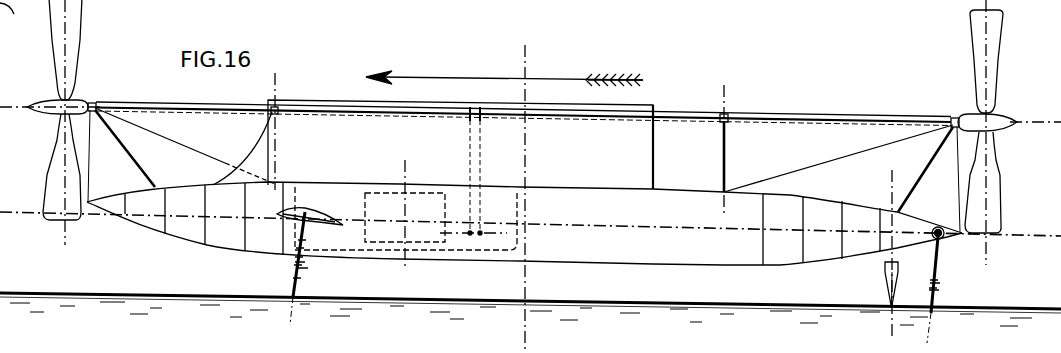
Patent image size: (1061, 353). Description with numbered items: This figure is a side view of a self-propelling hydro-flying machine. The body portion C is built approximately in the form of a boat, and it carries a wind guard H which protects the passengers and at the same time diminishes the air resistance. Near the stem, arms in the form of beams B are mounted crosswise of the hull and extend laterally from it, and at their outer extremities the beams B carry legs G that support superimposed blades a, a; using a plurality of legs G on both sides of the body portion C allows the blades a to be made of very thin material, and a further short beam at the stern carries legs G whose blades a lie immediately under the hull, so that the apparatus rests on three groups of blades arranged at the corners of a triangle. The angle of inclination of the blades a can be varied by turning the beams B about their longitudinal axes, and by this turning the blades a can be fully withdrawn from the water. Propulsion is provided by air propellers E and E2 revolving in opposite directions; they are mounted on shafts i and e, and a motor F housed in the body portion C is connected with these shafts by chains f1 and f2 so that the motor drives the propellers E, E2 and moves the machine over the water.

The air propeller E is at (77, 32).
The air propeller E2 is at (997, 55).
The shaft i is at (279, 111).
The shaft e is at (719, 119).
The chain f1 is at (459, 173).
The chain f2 is at (488, 173).
The wind guard H is at (460, 144).
The body portion C is at (524, 223).
The motor F is at (406, 218).
The beam B is at (943, 218).
The leg G is at (621, 277).
The blade a is at (624, 298).